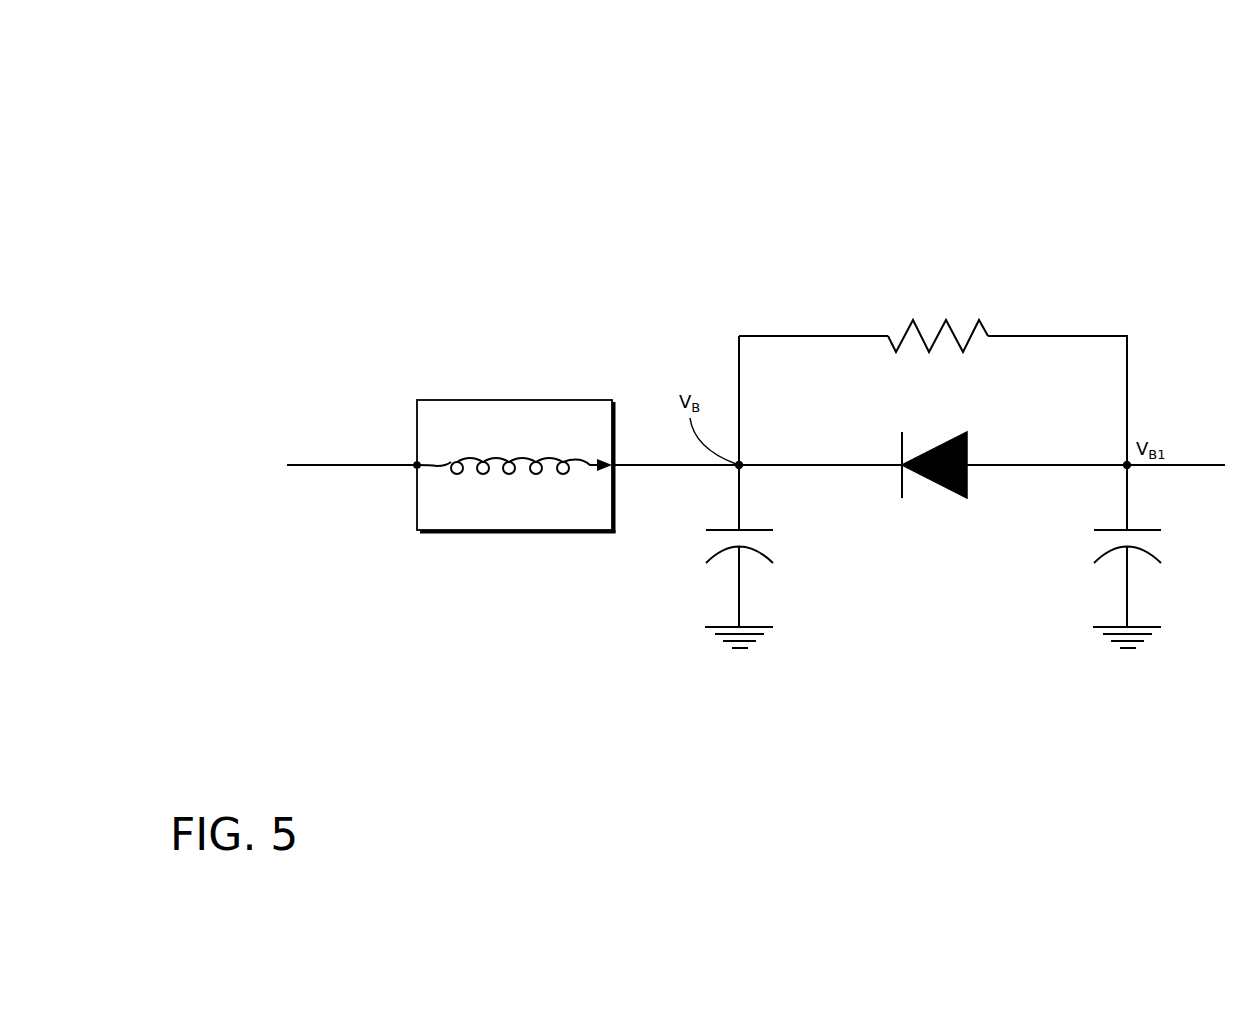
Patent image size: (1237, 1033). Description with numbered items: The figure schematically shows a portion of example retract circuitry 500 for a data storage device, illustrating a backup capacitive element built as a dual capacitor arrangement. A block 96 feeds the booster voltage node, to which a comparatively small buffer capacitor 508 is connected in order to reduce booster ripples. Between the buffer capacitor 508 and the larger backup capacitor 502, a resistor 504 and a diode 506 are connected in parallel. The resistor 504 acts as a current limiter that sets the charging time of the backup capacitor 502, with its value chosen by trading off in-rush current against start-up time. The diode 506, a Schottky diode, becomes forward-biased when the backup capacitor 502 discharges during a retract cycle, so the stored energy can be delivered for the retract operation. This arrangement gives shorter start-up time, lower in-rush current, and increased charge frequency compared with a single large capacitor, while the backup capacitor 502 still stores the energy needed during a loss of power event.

The retract circuitry 500 is at (509, 101).
The inductor block 96 is at (578, 400).
The resistor 504 is at (979, 320).
The diode 506 is at (967, 428).
The buffer capacitor 508 is at (755, 528).
The backup capacitor 502 is at (1143, 529).